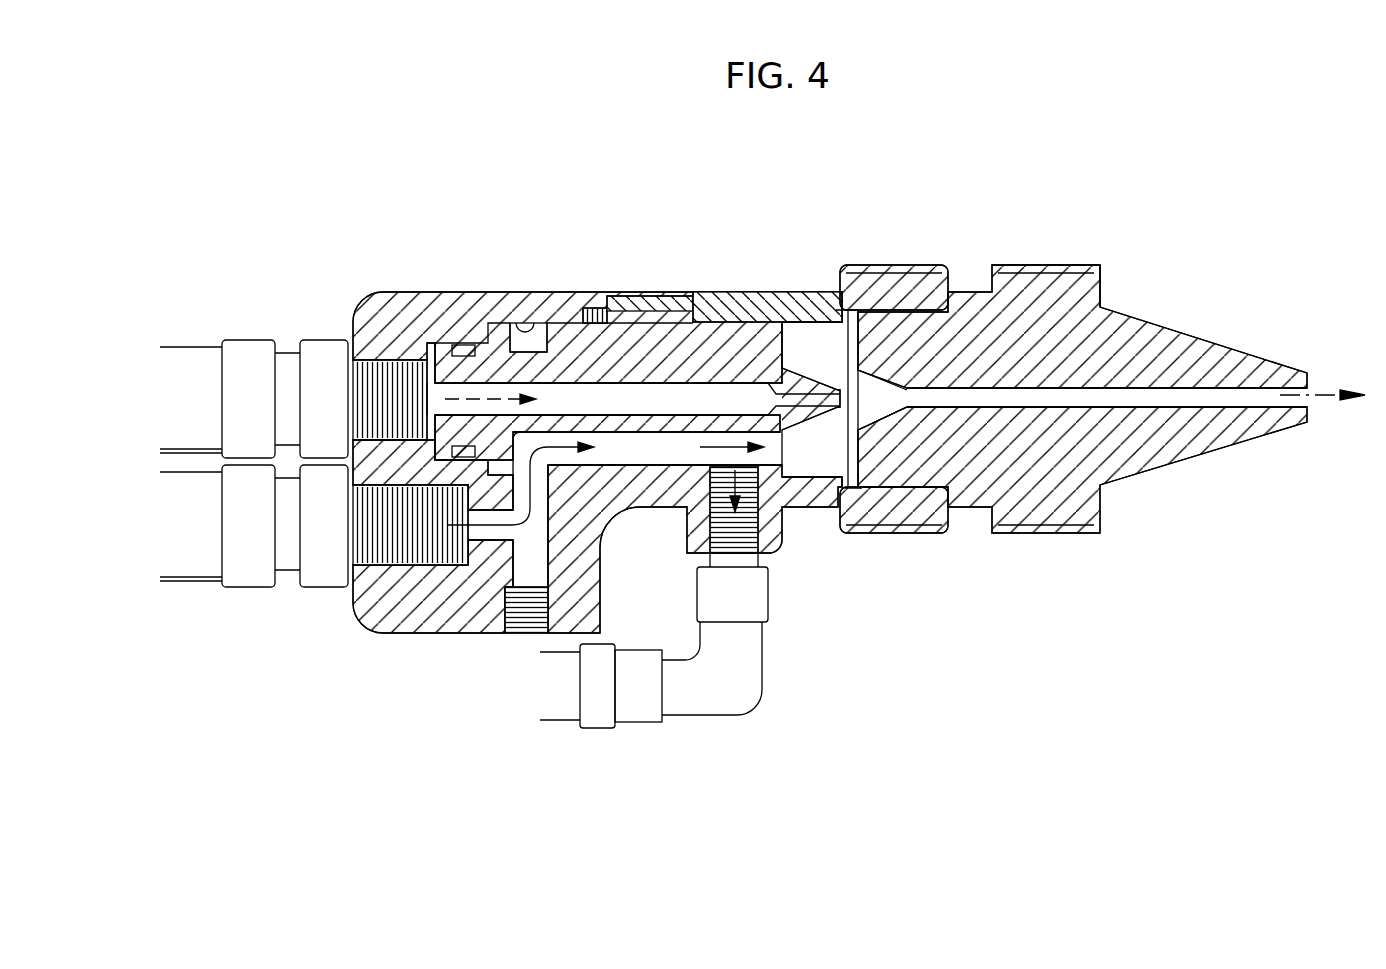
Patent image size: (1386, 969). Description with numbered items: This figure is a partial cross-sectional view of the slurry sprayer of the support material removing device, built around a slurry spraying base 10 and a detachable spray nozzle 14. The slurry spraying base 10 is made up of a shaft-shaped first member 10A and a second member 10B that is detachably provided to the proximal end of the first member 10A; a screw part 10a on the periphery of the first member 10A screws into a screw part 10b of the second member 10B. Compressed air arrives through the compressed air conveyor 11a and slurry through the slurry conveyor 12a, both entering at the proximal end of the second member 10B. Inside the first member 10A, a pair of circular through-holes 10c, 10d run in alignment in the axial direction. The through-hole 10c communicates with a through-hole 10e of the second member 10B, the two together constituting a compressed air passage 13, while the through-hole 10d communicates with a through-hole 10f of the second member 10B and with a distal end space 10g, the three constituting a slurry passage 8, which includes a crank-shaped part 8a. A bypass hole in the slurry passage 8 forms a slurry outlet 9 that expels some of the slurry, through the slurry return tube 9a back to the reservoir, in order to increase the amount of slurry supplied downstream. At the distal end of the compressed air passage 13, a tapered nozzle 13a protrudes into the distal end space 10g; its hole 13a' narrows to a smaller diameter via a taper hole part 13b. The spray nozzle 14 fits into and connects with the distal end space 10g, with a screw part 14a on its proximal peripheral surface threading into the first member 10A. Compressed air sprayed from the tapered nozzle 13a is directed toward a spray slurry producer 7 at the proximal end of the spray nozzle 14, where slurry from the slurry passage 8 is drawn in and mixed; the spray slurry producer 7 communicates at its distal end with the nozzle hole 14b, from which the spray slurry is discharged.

The spray slurry producer 7 is at (882, 395).
The slurry passage 8 is at (628, 452).
The crank-shaped part 8a is at (545, 499).
The slurry outlet 9 is at (775, 510).
The slurry return tube 9a is at (712, 715).
The slurry spraying base 10 is at (574, 290).
The first member 10A is at (790, 313).
The second member 10B is at (385, 633).
The screw part 10a is at (640, 300).
The screw part 10b is at (603, 312).
The through-hole 10c is at (722, 292).
The through-hole 10d is at (670, 458).
The through-hole 10e is at (437, 345).
The through-hole 10f is at (447, 568).
The distal end space 10g is at (522, 320).
The compressed air conveyor 11a is at (205, 355).
The slurry conveyor 12a is at (200, 575).
The compressed air passage 13 is at (712, 388).
The tapered nozzle 13a is at (825, 357).
The hole 13a' is at (841, 439).
The taper hole part 13b is at (815, 397).
The spray nozzle 14 is at (1194, 333).
The screw part 14a is at (942, 268).
The nozzle hole 14b is at (1207, 400).